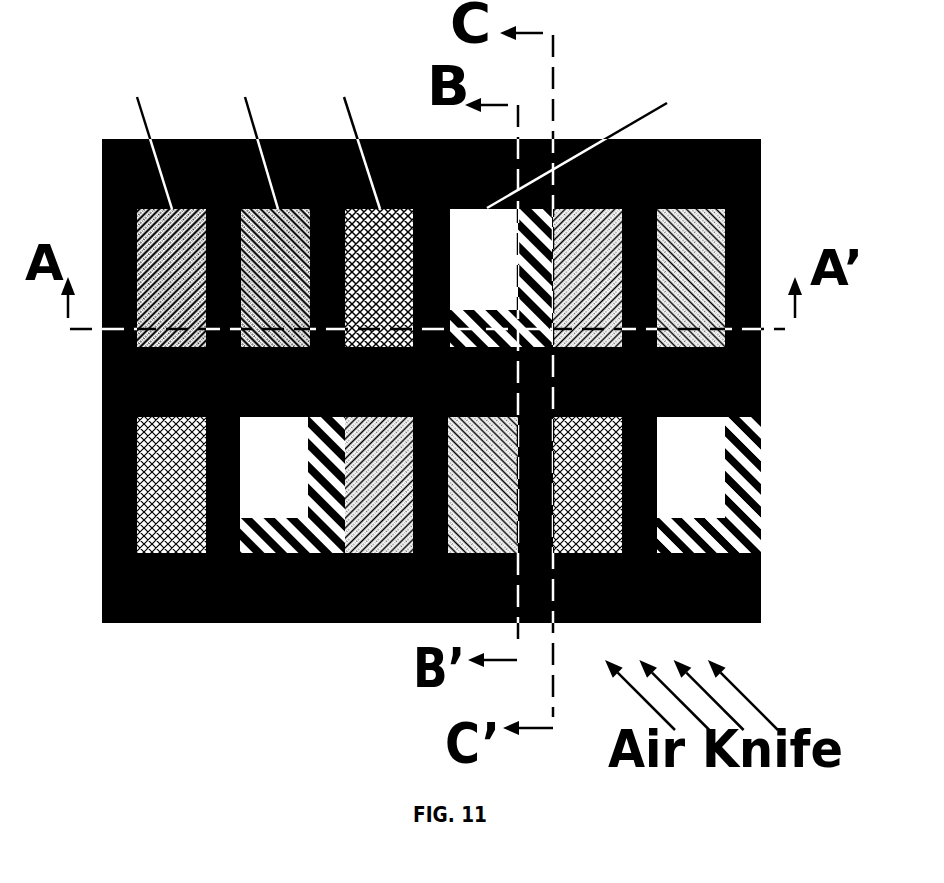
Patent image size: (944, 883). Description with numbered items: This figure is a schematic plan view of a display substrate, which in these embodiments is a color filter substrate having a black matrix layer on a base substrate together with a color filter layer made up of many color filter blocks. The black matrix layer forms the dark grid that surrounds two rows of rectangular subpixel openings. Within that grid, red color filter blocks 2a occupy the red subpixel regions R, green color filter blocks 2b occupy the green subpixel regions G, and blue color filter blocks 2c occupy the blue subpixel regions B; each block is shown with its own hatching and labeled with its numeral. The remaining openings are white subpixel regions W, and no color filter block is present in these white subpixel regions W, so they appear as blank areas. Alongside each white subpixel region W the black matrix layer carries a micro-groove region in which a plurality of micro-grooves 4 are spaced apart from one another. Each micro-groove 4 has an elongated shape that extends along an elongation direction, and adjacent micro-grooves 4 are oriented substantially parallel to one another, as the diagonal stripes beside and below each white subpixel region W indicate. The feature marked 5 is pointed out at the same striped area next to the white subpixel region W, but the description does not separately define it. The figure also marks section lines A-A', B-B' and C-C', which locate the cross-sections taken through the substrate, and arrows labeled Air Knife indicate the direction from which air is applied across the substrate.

The red color filter block 2a is at (379, 381).
The green color filter block 2b is at (483, 381).
The blue color filter block 2c is at (379, 381).
The micro-groove 4 is at (747, 487).
The air knife treated region 5 is at (742, 447).
The red subpixel region R is at (150, 139).
The green subpixel region G is at (258, 139).
The blue subpixel region B is at (358, 139).
The white subpixel region W is at (607, 139).